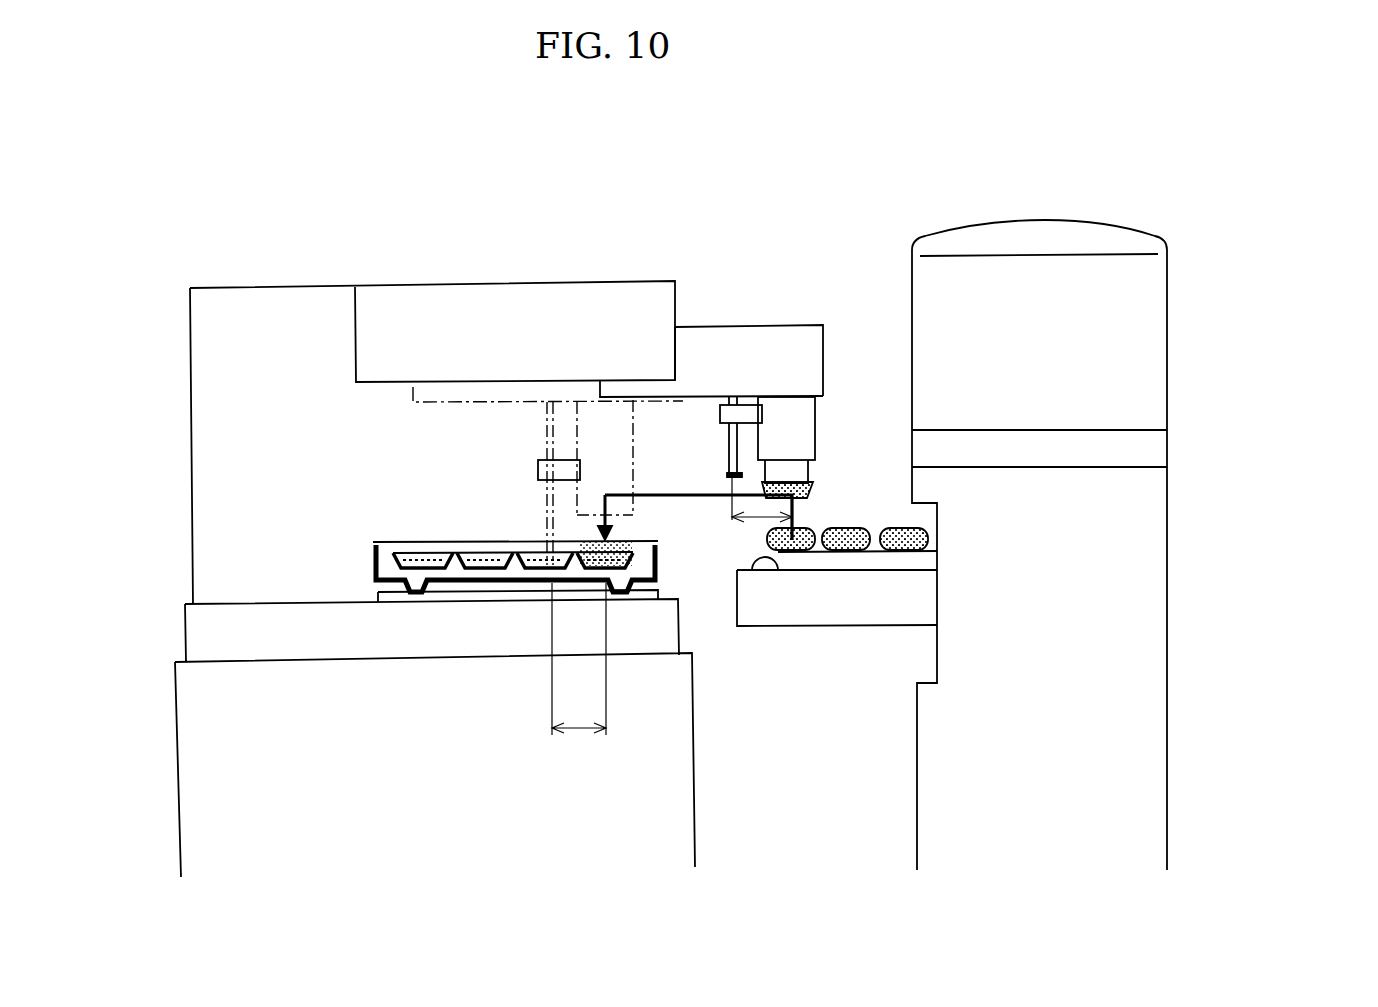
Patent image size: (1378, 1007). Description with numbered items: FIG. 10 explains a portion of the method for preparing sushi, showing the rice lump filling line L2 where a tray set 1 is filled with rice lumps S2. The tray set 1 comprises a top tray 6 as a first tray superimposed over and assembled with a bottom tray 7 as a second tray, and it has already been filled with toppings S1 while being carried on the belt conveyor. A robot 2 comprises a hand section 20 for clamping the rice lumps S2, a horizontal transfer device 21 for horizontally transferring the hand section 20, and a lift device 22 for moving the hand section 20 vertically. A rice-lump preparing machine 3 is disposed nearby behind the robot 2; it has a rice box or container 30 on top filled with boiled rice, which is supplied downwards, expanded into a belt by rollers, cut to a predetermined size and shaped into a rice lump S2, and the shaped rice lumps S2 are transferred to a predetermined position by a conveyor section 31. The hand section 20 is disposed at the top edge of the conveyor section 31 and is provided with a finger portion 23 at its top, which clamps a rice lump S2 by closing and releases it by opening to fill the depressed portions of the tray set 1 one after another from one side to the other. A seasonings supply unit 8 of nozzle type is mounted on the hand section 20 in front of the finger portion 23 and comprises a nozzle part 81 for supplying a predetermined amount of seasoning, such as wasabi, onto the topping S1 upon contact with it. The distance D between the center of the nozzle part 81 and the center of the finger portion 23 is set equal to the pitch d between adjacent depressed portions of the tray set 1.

The tray set 1 is at (363, 548).
The robot 2 is at (749, 278).
The rice-lump preparing machine 3 is at (1139, 545).
The top tray 6 is at (475, 511).
The bottom tray 7 is at (383, 580).
The seasonings supply unit 8 is at (712, 458).
The nozzle part 81 is at (728, 475).
The hand section 20 is at (826, 394).
The horizontal transfer device 21 is at (795, 305).
The lift device 22 is at (817, 433).
The finger portion 23 is at (812, 470).
The rice box or container 30 is at (1167, 298).
The conveyor section 31 is at (823, 617).
The toppings S1 is at (437, 563).
The rice lumps S2 is at (847, 533).
The distance D is at (760, 520).
The pitch d is at (577, 732).
The rice lump filling line L2 is at (168, 678).